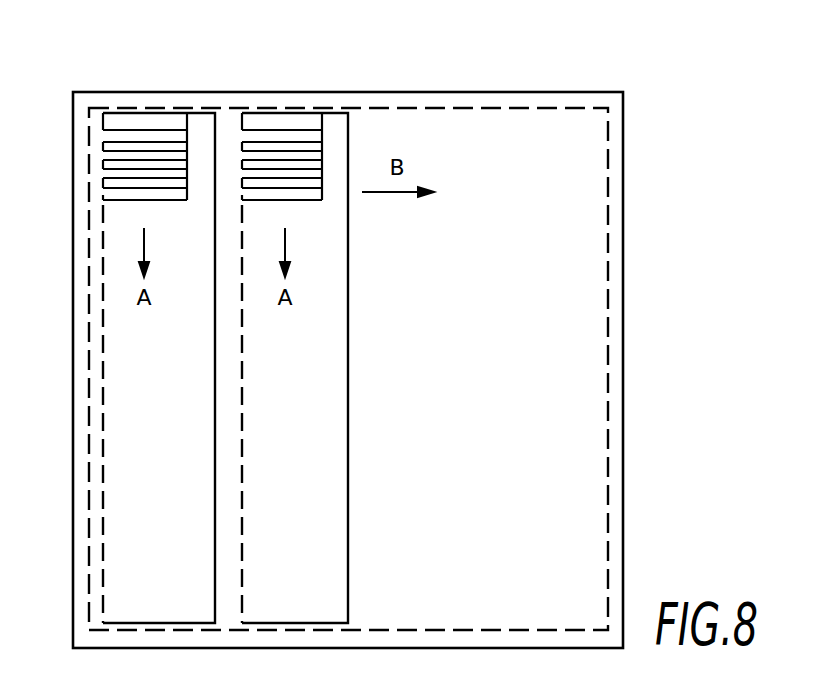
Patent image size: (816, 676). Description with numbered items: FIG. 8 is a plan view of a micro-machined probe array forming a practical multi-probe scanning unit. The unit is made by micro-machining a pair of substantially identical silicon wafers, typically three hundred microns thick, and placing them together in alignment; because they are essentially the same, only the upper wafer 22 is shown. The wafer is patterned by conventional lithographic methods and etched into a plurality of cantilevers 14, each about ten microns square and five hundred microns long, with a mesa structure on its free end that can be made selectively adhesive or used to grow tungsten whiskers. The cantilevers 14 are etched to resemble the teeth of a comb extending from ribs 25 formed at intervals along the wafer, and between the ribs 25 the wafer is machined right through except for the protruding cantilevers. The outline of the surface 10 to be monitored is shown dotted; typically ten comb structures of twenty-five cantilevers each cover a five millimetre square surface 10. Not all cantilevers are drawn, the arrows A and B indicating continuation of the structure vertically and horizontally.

The surface 10 is at (390, 369).
The cantilevers 14 is at (133, 153).
The upper wafer 22 is at (624, 434).
The ribs 25 is at (80, 415).